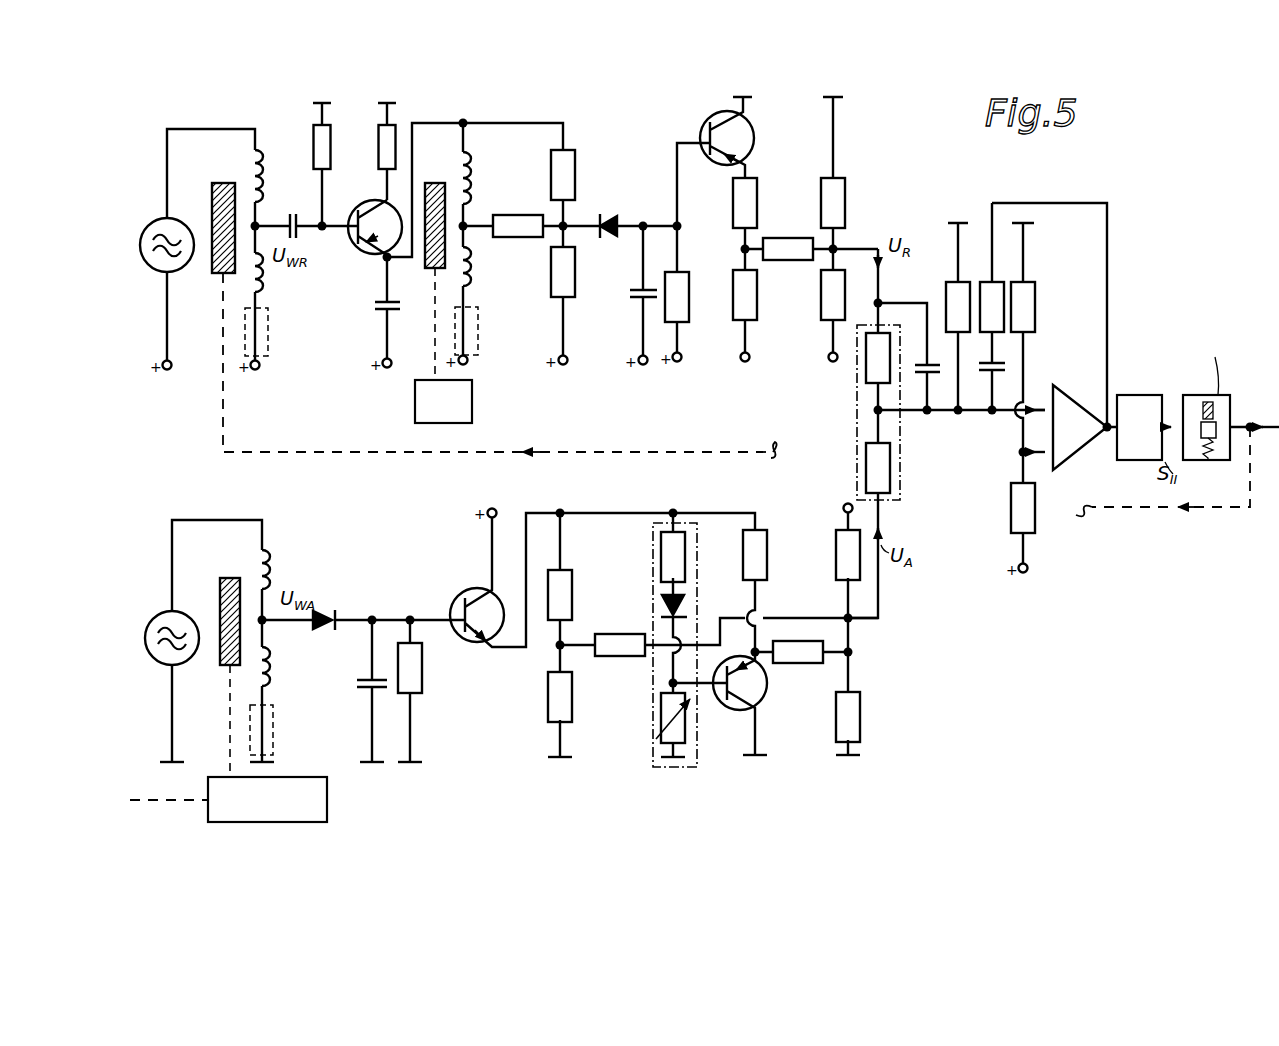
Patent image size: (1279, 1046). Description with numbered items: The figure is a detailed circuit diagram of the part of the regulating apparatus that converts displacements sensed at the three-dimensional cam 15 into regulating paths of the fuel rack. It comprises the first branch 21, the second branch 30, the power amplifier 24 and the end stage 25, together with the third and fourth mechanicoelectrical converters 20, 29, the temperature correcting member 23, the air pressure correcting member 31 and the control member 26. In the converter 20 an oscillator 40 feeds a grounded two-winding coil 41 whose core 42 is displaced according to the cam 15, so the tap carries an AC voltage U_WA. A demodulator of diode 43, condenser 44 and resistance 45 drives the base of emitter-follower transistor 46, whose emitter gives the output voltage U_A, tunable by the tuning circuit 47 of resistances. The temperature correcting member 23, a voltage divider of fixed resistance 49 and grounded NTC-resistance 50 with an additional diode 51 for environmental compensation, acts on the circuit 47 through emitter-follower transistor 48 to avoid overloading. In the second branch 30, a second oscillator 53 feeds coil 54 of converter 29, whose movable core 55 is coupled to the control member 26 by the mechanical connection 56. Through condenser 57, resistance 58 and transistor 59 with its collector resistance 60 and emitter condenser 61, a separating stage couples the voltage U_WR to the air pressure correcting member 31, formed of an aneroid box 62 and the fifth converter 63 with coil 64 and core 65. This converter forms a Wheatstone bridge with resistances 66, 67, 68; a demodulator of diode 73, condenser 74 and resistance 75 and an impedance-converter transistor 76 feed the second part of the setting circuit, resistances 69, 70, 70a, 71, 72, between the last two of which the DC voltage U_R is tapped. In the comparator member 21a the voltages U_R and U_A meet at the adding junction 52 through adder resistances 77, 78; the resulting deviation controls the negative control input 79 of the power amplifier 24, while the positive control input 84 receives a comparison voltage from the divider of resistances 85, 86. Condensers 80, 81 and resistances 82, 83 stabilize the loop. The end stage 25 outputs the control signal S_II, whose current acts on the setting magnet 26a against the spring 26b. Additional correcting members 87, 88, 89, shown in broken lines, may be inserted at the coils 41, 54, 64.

The three-dimensional cam 15 is at (327, 808).
The third mechanicoelectrical converter 20 is at (223, 641).
The first branch 21 is at (898, 604).
The desired and actual value comparator member 21a is at (856, 425).
The temperature correcting member 23 is at (671, 640).
The power amplifier 24 is at (1078, 404).
The end stage 25 is at (1140, 395).
The control member 26 is at (1225, 409).
The setting magnet 26a is at (1213, 406).
The spring 26b is at (1210, 458).
The fourth mechanicoelectrical converter 29 is at (222, 249).
The second branch 30 is at (790, 232).
The air pressure correcting member 31 is at (458, 271).
The oscillator 40 is at (163, 618).
The coil 41 is at (254, 556).
The core 42 is at (219, 585).
The diode 43 is at (323, 628).
The condenser 44 is at (360, 683).
The resistance 45 is at (419, 679).
The emitter follower n-p-n transistor 46 is at (470, 593).
The tuning circuit 47 is at (596, 580).
The emitter-follower p-n-p transistor 48 is at (759, 693).
The fixed resistance 49 is at (686, 546).
The temperature-dependent NTC-resistance 50 is at (686, 727).
The additional diode 51 is at (686, 595).
The adding junction 52 is at (888, 418).
The second oscillator 53 is at (158, 230).
The coil 54 is at (249, 168).
The movable core 55 is at (217, 215).
The mechanical connection 56 is at (1135, 517).
The condenser 57 is at (292, 214).
The resistance 58 is at (314, 138).
The p-n-p transistor 59 is at (370, 205).
The resistance 60 is at (379, 138).
The condenser 61 is at (375, 307).
The aneroid box 62 is at (415, 408).
The fifth mechanicoelectrical converter 63 is at (496, 218).
The coil 64 is at (469, 174).
The core 65 is at (434, 183).
The line resistance 66 is at (517, 215).
The resistance 67 is at (573, 181).
The resistance 68 is at (570, 276).
The resistance 69 is at (756, 205).
The resistance 70 is at (755, 303).
The resistance 70a is at (785, 242).
The resistance 71 is at (845, 202).
The resistance 72 is at (822, 306).
The diode 73 is at (608, 216).
The condenser 74 is at (634, 297).
The resistance 75 is at (690, 301).
The emitter-follower p-n-p transistor 76 is at (713, 124).
The adder resistance 77 is at (866, 376).
The adder resistance 78 is at (866, 464).
The negative control input 79 is at (1035, 404).
The condenser 80 is at (912, 364).
The condenser 81 is at (977, 367).
The resistance 82 is at (948, 288).
The resistance 83 is at (992, 290).
The positive control input 84 is at (1030, 458).
The resistance 85 is at (1033, 290).
The resistance 86 is at (1011, 508).
The additional correcting member 87 is at (273, 733).
The additional correcting member 88 is at (270, 327).
The additional correcting member 89 is at (479, 329).